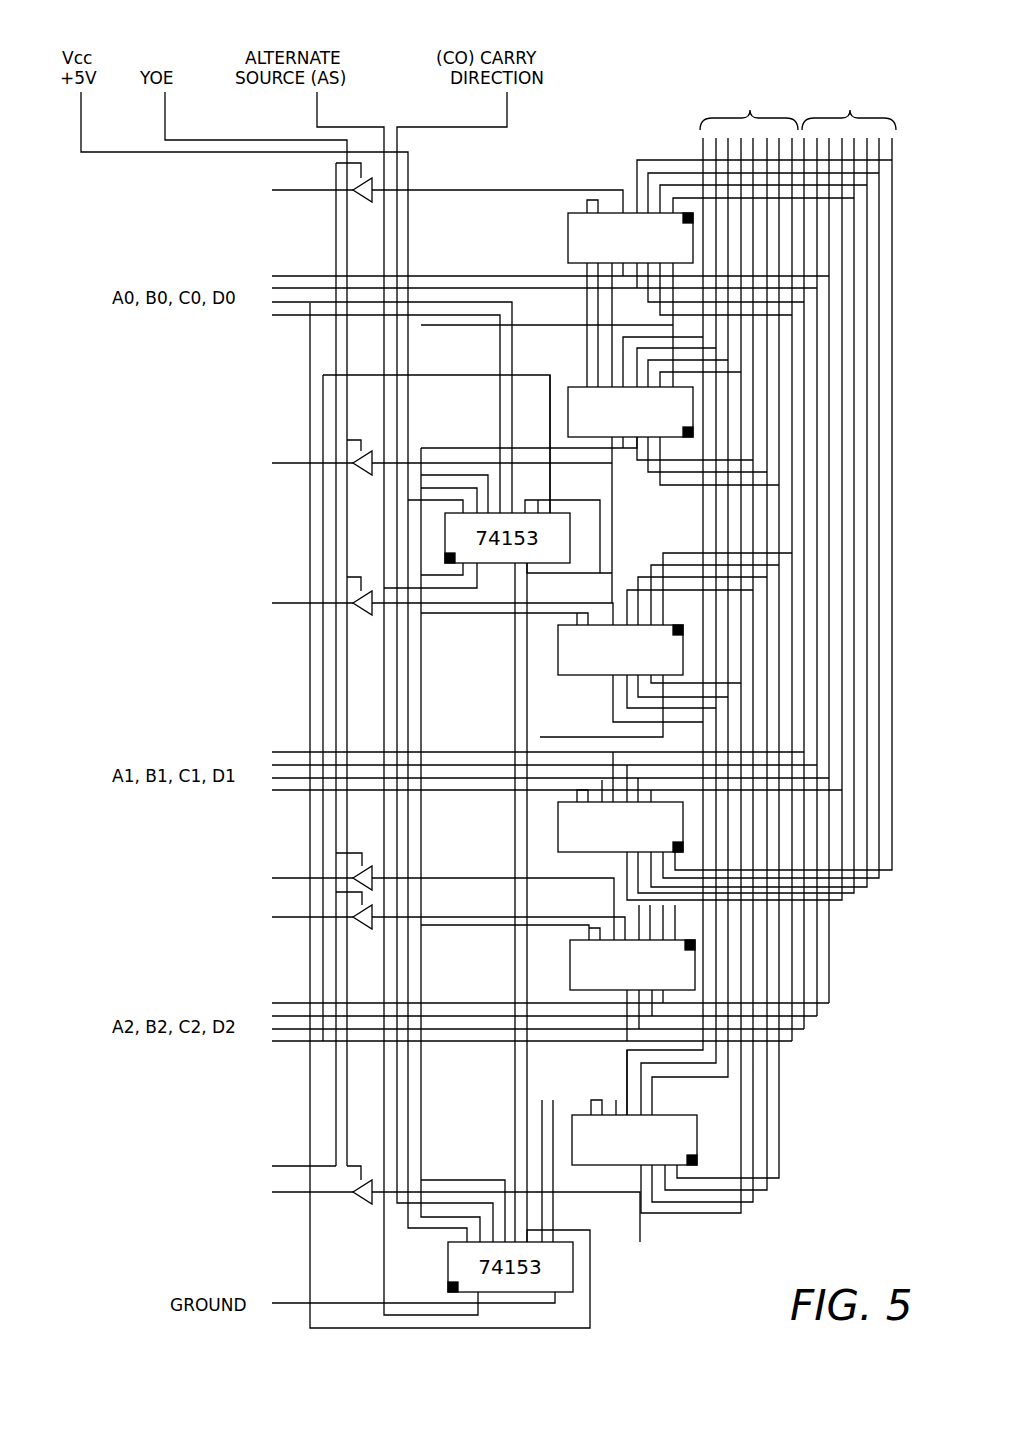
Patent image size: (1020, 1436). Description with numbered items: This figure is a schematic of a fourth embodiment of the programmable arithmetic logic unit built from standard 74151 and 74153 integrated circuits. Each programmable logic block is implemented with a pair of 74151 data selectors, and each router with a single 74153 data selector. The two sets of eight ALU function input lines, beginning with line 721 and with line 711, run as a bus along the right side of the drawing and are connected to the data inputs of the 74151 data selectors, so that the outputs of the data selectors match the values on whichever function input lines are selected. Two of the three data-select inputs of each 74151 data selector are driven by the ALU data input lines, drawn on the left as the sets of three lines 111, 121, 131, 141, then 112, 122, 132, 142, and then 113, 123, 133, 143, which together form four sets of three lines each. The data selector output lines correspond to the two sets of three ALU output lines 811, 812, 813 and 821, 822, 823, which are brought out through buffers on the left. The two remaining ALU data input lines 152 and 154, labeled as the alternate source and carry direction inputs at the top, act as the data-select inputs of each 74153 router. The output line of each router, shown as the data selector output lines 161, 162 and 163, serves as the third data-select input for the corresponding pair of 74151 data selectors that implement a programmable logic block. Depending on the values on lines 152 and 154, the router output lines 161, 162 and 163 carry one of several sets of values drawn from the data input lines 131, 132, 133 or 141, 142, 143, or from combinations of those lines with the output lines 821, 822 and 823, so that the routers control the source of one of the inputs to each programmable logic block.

The ALU data input line 111 is at (128, 314).
The ALU data input line 121 is at (168, 314).
The ALU data input line 131 is at (207, 314).
The ALU data input line 141 is at (253, 314).
The ALU data input line 112 is at (125, 764).
The ALU data input line 122 is at (168, 764).
The ALU data input line 132 is at (208, 764).
The ALU data input line 142 is at (253, 764).
The ALU data input line 113 is at (130, 1042).
The ALU data input line 123 is at (168, 1042).
The ALU data input line 133 is at (208, 1042).
The ALU data input line 143 is at (255, 1042).
The ALU output line 811 is at (243, 210).
The ALU output line 812 is at (245, 870).
The ALU output line 813 is at (245, 935).
The ALU output line 821 is at (243, 483).
The ALU output line 822 is at (245, 594).
The ALU output line 823 is at (232, 1168).
The ALU data input line 152 is at (317, 105).
The ALU data input line 154 is at (507, 103).
The data selector output line 161 is at (585, 355).
The data selector output line 162 is at (575, 690).
The data selector output line 163 is at (590, 1080).
The ALU function input line 721 is at (712, 618).
The ALU function input line 711 is at (771, 526).